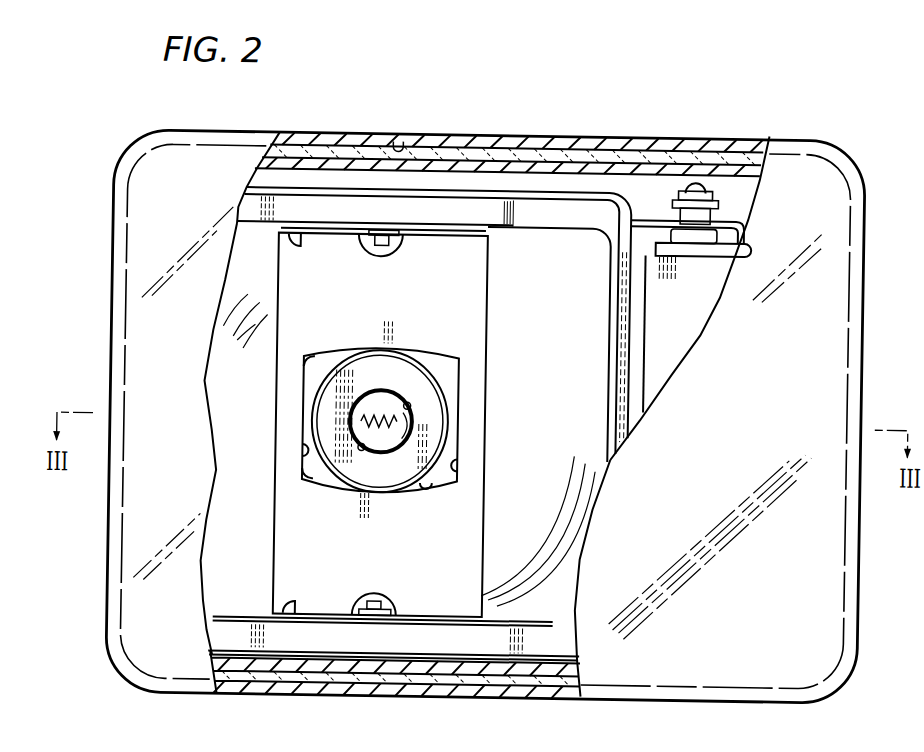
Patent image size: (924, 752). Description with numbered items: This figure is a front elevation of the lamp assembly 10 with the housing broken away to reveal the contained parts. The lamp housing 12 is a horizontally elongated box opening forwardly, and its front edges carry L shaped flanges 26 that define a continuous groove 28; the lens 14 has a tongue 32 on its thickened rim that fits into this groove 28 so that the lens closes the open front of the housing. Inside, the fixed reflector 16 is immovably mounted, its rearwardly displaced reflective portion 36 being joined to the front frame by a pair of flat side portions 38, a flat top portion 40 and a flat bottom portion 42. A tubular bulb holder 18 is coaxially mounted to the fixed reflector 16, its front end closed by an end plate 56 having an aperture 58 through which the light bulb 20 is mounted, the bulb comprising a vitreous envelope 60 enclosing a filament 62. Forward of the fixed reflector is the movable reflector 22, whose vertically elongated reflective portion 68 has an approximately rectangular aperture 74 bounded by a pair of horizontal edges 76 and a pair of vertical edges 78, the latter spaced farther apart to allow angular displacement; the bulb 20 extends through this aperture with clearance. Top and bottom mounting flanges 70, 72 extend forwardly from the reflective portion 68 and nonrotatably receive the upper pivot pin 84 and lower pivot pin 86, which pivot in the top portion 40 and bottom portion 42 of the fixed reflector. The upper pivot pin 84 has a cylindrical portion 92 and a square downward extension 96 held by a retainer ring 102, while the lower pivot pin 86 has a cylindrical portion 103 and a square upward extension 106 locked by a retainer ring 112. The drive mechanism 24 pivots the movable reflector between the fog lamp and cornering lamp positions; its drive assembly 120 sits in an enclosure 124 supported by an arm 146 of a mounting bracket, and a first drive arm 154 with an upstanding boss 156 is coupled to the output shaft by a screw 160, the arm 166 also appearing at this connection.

The lamp assembly 10 is at (846, 121).
The lamp housing 12 is at (440, 135).
The lens 14 is at (837, 244).
The fixed reflector 16 is at (539, 189).
The bulb holder 18 is at (337, 355).
The light bulb 20 is at (363, 449).
The movable reflector 22 is at (268, 416).
The drive mechanism 24 is at (745, 214).
The L shaped flanges 26 is at (489, 135).
The groove 28 is at (393, 143).
The tongue 32 is at (338, 150).
The reflective portion 36 is at (577, 412).
The side portions 38 is at (605, 316).
The top portion 40 is at (530, 229).
The bottom portion 42 is at (555, 625).
The end plate 56 is at (440, 424).
The aperture 58 is at (407, 408).
The envelope 60 is at (380, 399).
The filament 62 is at (388, 412).
The reflective portion 68 is at (291, 310).
The top mounting flange 70 is at (294, 237).
The bottom mounting flange 72 is at (296, 616).
The aperture 74 is at (313, 482).
The horizontal edges 76 is at (303, 363).
The vertical edges 78 is at (308, 455).
The upper pivot pin 84 is at (375, 248).
The lower pivot pin 86 is at (374, 600).
The cylindrical portion 92 is at (370, 227).
The downward extension 96 is at (379, 249).
The retainer ring 102 is at (390, 236).
The cylindrical portion 103 is at (396, 624).
The upward extension 106 is at (384, 598).
The retainer ring 112 is at (394, 609).
The drive assembly 120 is at (679, 324).
The enclosure 124 is at (705, 301).
The arm 146 is at (742, 222).
The first drive arm 154 is at (724, 196).
The boss 156 is at (681, 184).
The screw 160 is at (693, 179).
The terminal post 166 is at (646, 189).